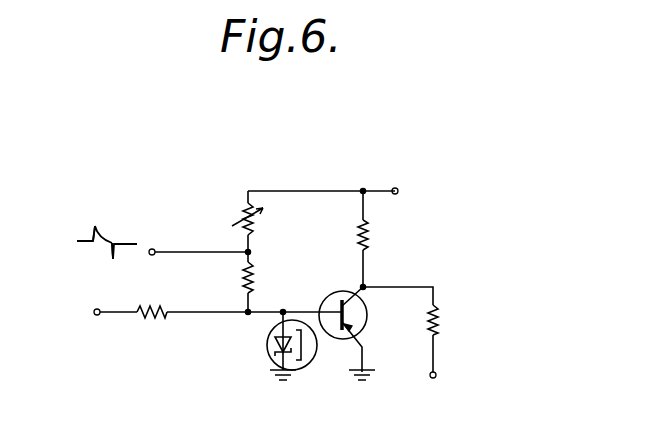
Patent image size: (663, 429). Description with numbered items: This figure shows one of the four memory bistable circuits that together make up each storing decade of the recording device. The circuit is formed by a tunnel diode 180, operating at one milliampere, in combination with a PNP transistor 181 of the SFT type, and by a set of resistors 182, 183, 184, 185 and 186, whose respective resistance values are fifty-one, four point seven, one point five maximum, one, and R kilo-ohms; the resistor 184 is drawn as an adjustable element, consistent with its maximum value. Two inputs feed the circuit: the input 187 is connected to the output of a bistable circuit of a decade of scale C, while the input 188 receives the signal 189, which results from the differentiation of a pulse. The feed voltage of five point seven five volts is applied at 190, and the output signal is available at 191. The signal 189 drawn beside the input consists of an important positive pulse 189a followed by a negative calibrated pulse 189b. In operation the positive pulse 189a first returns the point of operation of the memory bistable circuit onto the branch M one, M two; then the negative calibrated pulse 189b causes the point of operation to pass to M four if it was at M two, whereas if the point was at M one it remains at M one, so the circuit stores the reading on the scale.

The tunnel diode 180 is at (268, 347).
The PNP transistor 181 is at (368, 322).
The resistor 182 is at (152, 306).
The resistor 183 is at (254, 283).
The resistor 184 is at (257, 227).
The resistor 185 is at (371, 237).
The resistor 186 is at (441, 330).
The input 187 is at (96, 315).
The input 188 is at (154, 249).
The signal 189 is at (107, 233).
The positive pulse 189a is at (92, 233).
The negative calibrated pulse 189b is at (110, 253).
The feed voltage terminal 190 is at (398, 190).
The output 191 is at (437, 375).